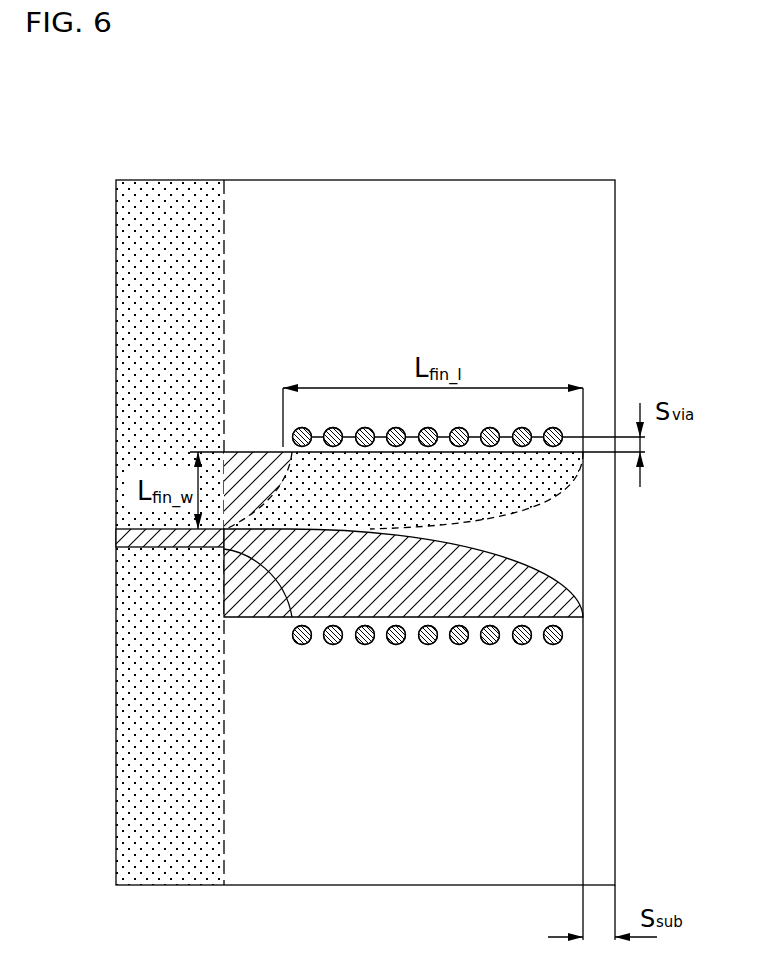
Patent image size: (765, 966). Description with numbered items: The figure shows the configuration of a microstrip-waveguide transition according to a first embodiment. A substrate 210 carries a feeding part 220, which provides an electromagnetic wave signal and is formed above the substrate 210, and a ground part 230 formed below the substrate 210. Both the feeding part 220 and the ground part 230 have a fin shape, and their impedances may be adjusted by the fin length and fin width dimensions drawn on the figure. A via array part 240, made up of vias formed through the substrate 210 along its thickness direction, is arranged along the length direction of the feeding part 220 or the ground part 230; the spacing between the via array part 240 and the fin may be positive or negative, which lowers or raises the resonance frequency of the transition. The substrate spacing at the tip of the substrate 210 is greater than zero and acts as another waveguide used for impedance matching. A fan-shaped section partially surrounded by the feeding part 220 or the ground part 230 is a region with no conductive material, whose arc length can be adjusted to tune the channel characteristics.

The substrate 210 is at (388, 213).
The feeding part 220 is at (550, 596).
The ground part 230 is at (522, 490).
The via array part 240 is at (296, 430).